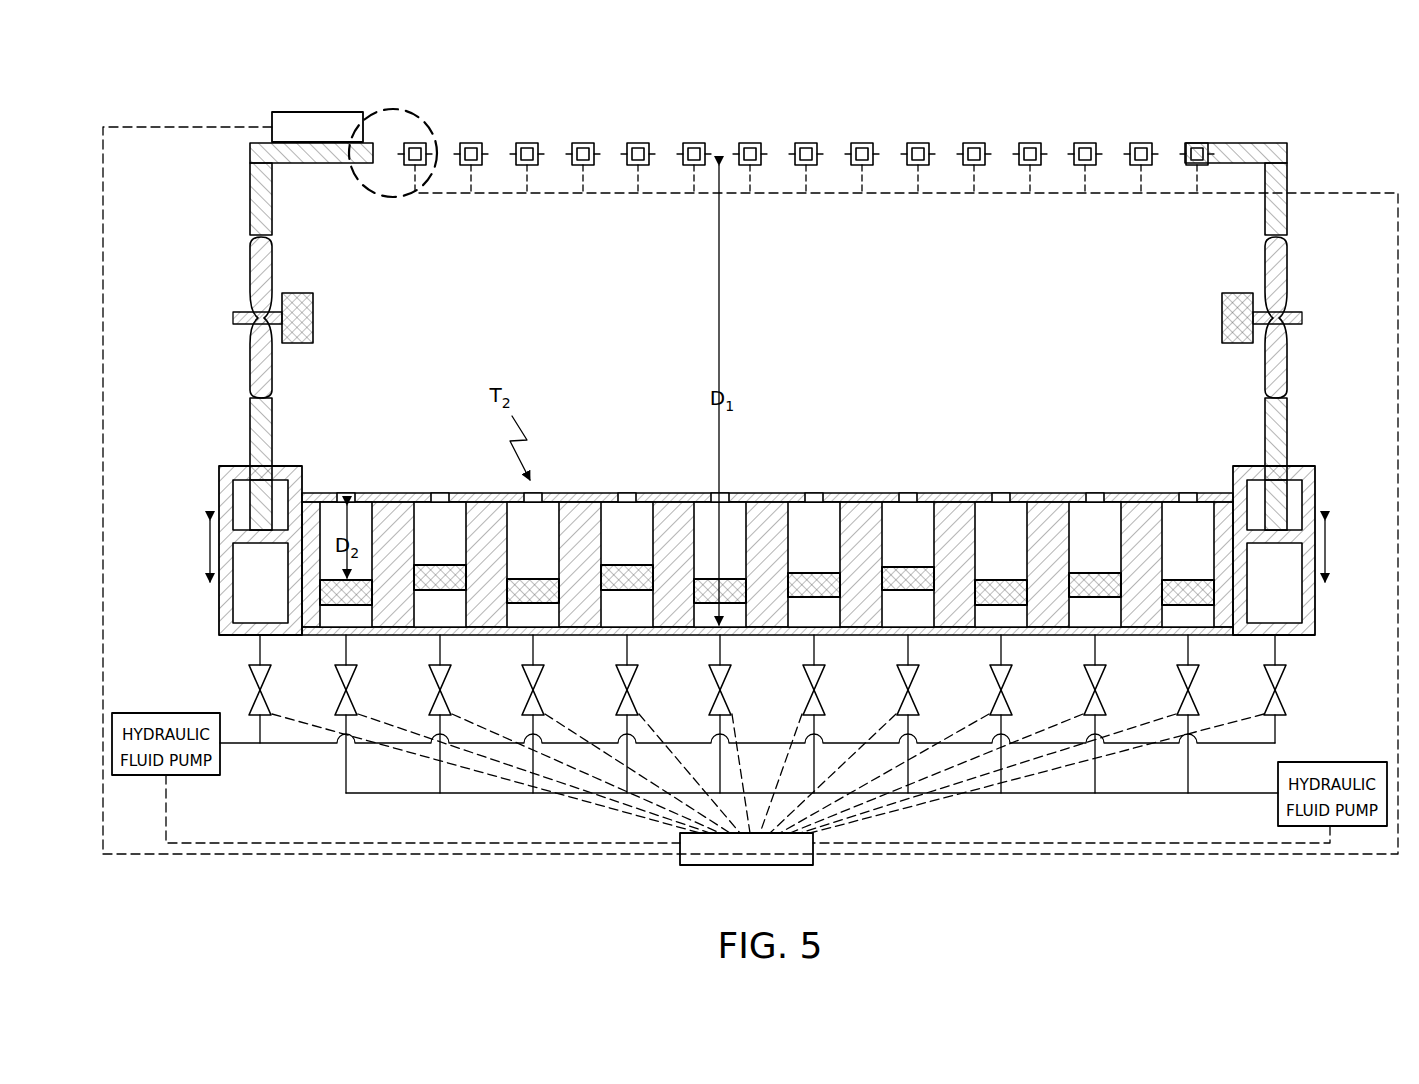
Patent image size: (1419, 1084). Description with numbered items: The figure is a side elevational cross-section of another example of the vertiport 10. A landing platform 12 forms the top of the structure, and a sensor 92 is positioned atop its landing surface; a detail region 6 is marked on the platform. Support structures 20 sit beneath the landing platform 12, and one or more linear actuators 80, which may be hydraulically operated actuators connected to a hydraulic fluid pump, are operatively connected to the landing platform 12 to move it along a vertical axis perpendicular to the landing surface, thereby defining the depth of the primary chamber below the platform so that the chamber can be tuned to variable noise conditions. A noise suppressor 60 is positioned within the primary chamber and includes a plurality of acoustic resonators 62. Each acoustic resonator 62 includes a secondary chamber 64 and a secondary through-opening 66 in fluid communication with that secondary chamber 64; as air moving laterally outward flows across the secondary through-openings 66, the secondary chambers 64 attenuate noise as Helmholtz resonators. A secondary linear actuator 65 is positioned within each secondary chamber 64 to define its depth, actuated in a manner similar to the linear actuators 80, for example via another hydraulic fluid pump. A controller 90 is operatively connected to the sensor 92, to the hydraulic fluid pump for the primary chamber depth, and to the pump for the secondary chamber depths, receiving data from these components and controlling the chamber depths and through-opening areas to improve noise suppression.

The vertiport 10 is at (1324, 118).
The landing platform 12 is at (302, 166).
The noise suppressor 60 is at (1253, 232).
The sensor 92 is at (318, 112).
The detail region 6 is at (394, 109).
The linear actuator 80 is at (219, 492).
The support structure 20 is at (1070, 482).
The acoustic resonator 62 is at (362, 493).
The secondary through-opening 66 is at (442, 493).
The secondary chamber 64 is at (720, 537).
The secondary linear actuator 65 is at (521, 580).
The controller 90 is at (746, 866).